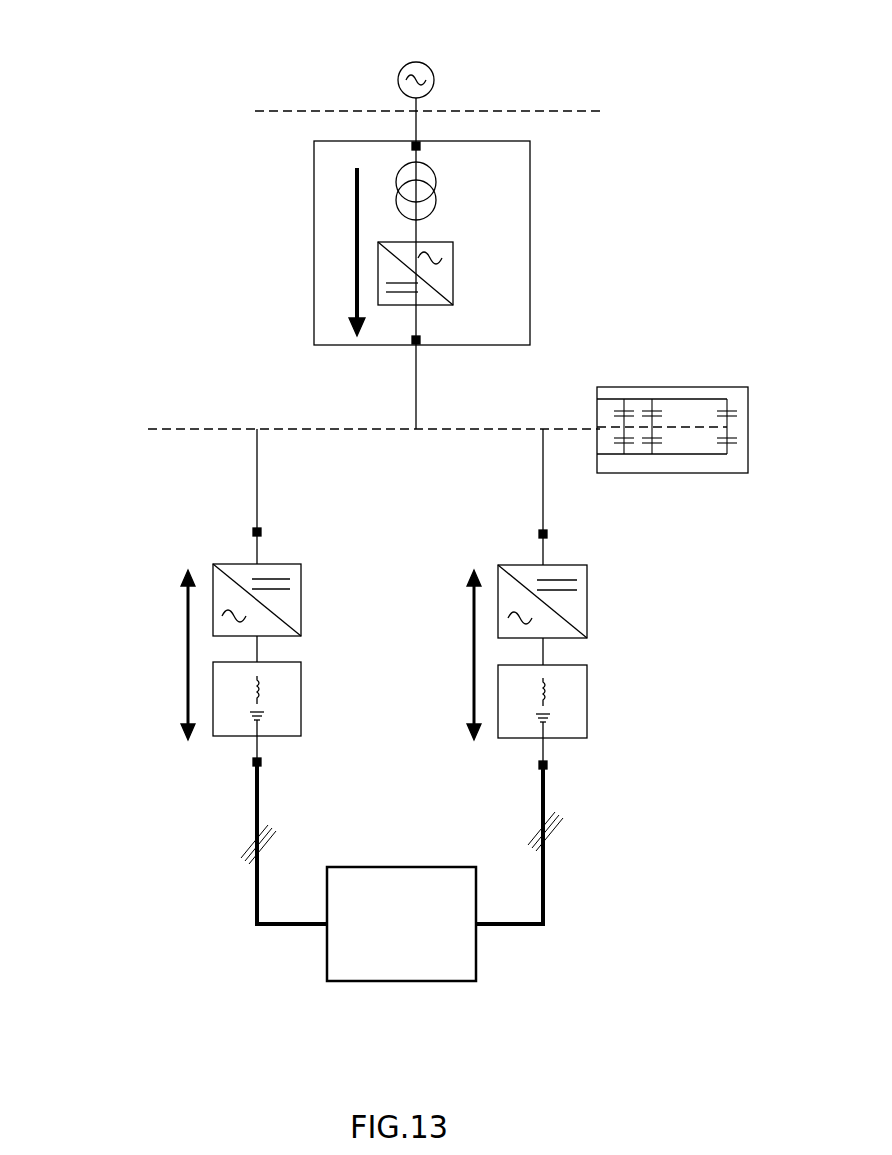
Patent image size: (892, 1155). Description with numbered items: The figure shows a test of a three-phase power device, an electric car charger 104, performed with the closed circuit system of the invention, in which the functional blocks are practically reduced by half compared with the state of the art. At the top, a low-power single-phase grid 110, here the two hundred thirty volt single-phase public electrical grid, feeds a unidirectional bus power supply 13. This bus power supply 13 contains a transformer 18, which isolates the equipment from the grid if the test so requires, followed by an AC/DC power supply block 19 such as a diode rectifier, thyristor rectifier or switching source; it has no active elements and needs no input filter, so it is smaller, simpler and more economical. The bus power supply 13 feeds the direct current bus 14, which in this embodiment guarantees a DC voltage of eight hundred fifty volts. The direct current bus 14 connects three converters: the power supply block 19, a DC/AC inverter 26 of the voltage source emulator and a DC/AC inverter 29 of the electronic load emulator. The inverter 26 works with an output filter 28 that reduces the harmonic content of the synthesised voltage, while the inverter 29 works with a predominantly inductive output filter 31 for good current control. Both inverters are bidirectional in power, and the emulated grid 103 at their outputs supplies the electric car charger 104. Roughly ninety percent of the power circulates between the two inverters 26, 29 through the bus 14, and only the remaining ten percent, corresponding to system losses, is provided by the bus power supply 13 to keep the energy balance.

The low-power single-phase grid 110 is at (363, 110).
The bus power supply 13 is at (313, 272).
The transformer 18 is at (432, 190).
The AC/DC power supply block 19 is at (450, 292).
The direct current bus 14 is at (735, 397).
The DC/AC inverter 26 is at (225, 565).
The output filter 28 is at (226, 736).
The DC/AC inverter 29 is at (587, 600).
The output filter 31 is at (587, 717).
The emulated grid 103 is at (257, 924).
The electric car charger 104 is at (350, 981).